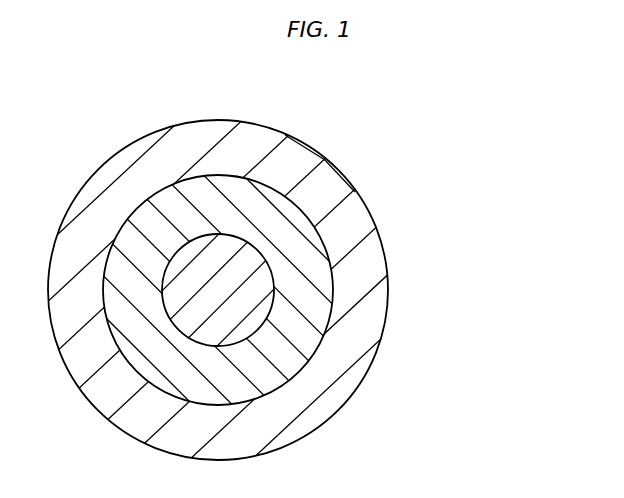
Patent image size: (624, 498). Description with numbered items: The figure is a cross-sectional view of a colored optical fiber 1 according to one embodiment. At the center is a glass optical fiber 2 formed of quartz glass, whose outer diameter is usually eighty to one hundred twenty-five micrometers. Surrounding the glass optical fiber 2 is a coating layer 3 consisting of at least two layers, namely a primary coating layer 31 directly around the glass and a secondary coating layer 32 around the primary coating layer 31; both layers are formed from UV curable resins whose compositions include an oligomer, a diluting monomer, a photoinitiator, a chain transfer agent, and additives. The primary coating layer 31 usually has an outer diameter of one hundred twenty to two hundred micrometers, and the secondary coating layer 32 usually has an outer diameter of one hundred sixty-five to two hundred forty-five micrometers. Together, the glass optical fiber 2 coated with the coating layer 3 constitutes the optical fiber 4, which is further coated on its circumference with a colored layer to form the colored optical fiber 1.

The colored optical fiber 1 is at (274, 249).
The glass optical fiber 2 is at (250, 285).
The coating layer 3 is at (262, 249).
The primary coating layer 31 is at (285, 352).
The secondary coating layer 32 is at (302, 402).
The optical fiber 4 is at (274, 249).